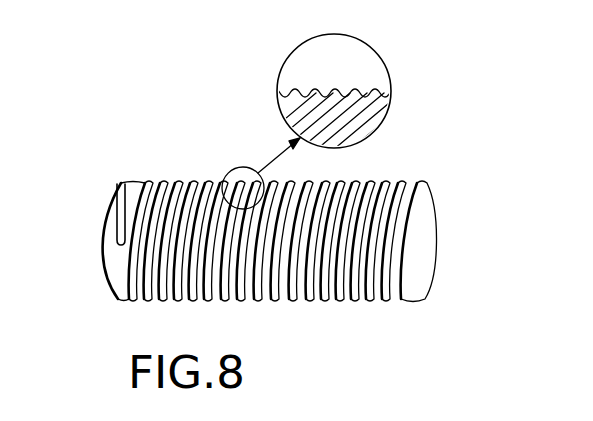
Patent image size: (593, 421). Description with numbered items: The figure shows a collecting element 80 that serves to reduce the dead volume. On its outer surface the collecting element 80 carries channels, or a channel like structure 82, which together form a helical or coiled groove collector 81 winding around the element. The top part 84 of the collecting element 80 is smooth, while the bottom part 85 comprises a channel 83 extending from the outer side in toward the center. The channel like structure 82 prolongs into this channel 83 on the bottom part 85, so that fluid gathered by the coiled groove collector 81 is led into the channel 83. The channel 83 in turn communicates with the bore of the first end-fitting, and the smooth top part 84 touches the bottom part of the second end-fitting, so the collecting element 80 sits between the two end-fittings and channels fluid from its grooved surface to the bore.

The collecting element 80 is at (261, 258).
The helical or coiled groove collector 81 is at (273, 300).
The channel like structure 82 is at (357, 90).
The channel 83 is at (120, 217).
The top part 84 is at (438, 220).
The bottom part 85 is at (117, 275).